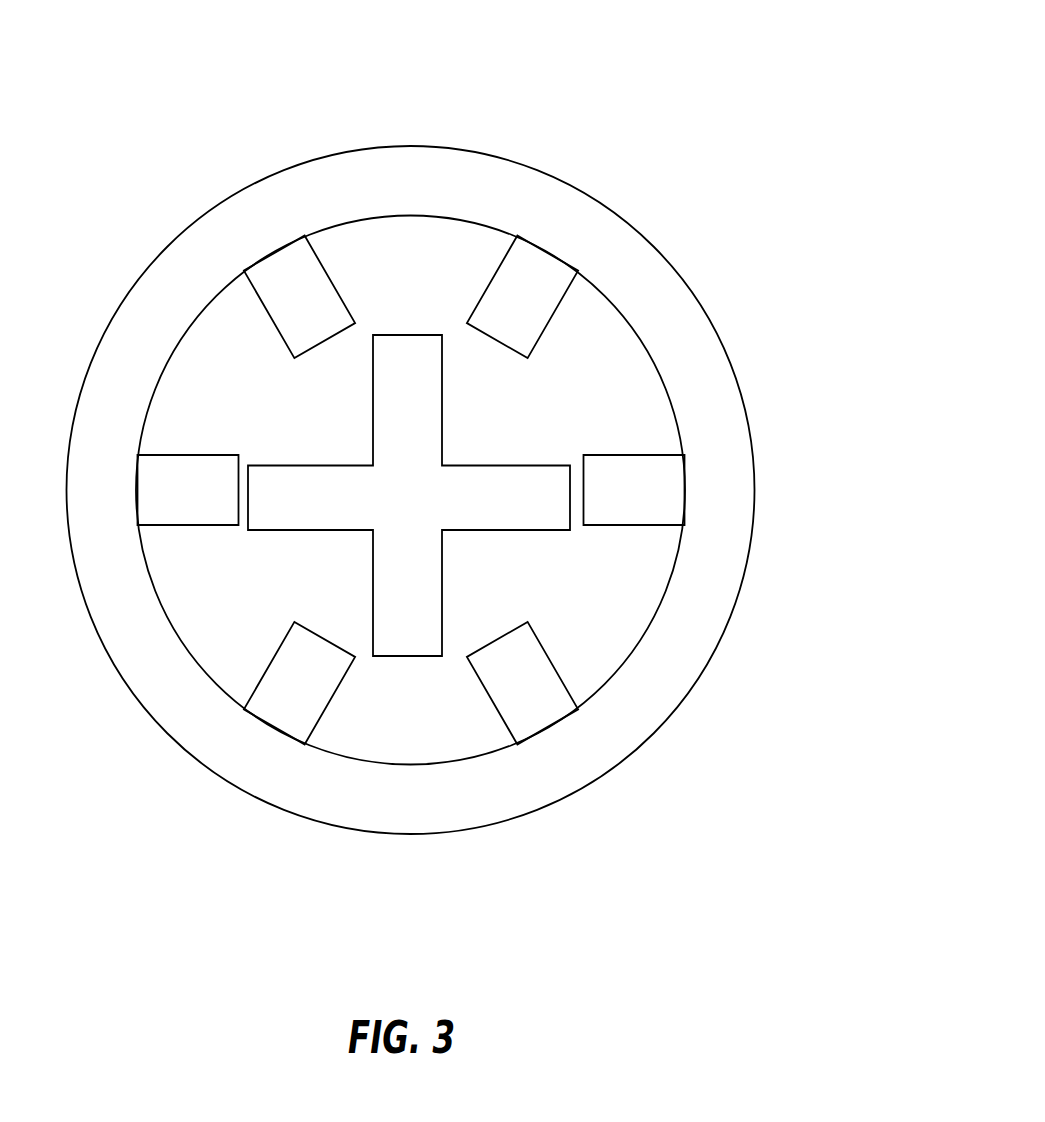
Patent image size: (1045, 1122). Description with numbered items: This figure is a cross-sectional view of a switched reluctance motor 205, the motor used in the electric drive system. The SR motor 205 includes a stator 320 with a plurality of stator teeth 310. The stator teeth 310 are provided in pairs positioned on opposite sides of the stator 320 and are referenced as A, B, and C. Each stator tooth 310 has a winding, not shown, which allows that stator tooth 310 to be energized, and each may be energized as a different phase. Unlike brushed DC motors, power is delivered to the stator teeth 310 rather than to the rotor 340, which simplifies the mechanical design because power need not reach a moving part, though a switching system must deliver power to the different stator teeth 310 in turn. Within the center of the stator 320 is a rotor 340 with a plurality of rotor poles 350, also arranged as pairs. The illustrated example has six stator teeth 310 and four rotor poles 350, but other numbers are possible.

The switched reluctance motor 205 is at (609, 74).
The stator teeth 310 is at (668, 497).
The stator 320 is at (628, 257).
The rotor 340 is at (393, 503).
The rotor poles 350 is at (398, 353).